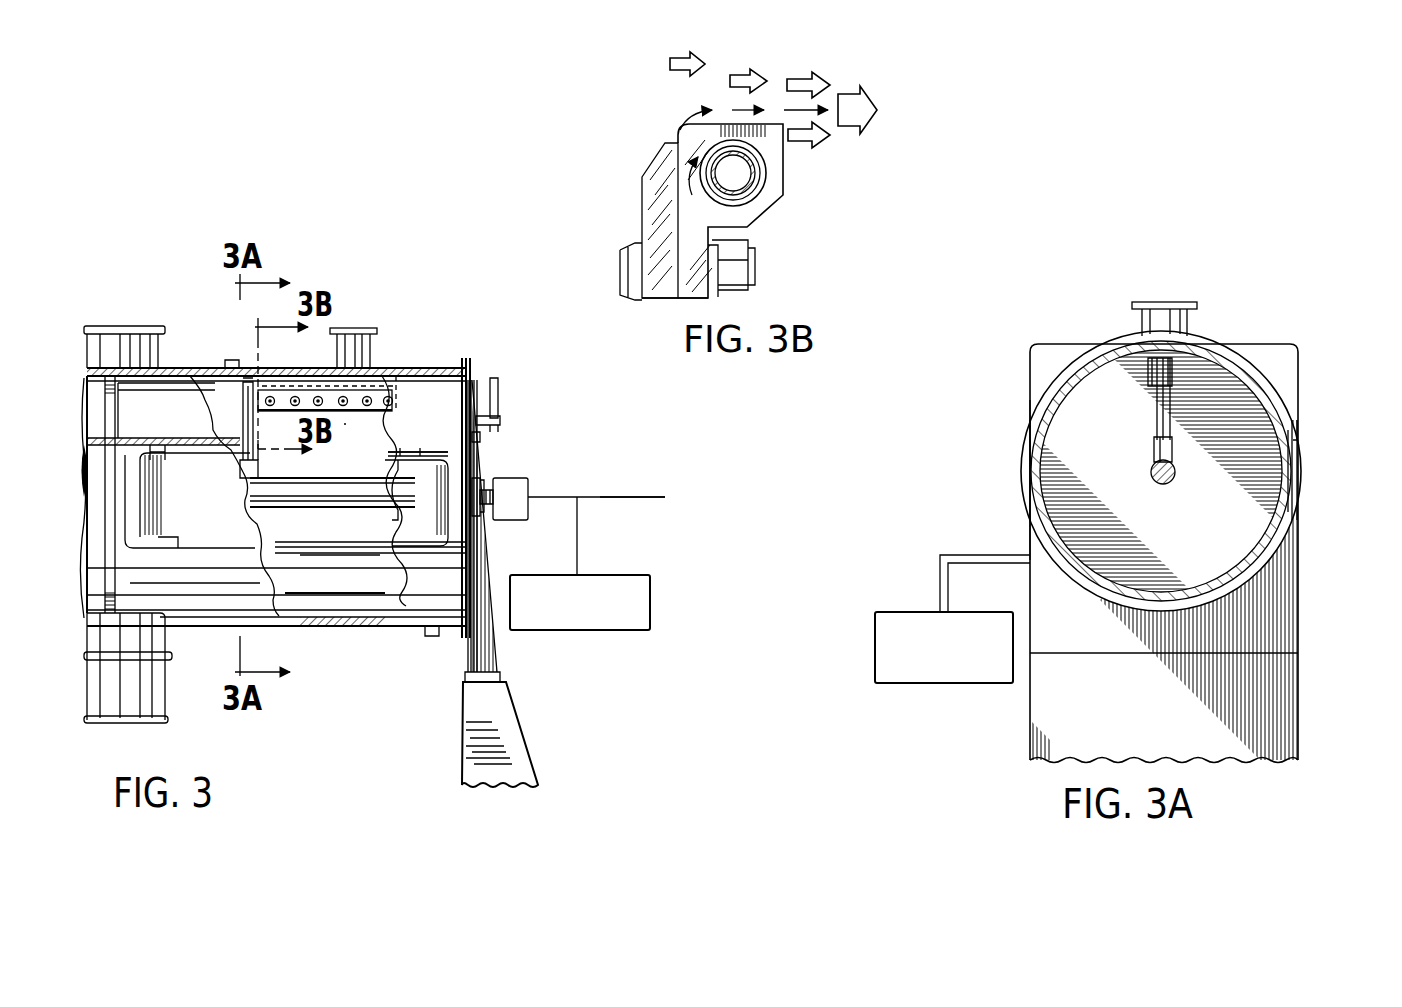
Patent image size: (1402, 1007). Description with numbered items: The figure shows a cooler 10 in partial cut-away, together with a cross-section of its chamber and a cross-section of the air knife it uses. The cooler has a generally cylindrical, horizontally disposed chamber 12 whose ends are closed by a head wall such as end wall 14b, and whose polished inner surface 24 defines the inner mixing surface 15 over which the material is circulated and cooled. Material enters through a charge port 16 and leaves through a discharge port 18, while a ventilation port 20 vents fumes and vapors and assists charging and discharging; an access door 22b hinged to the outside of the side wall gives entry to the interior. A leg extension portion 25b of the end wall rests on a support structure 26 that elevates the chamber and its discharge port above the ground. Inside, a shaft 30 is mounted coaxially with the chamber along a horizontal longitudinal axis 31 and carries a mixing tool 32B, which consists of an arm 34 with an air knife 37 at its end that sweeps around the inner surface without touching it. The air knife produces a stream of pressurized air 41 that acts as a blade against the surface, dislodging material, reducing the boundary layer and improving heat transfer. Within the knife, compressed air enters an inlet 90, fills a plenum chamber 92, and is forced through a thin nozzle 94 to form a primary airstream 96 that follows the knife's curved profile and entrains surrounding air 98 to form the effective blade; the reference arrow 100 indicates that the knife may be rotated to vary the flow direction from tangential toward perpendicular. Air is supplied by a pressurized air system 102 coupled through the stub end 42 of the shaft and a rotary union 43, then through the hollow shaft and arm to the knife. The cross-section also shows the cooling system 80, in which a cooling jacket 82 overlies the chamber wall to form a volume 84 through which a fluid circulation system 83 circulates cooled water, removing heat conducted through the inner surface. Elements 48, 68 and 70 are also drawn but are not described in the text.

In FIG. 3, the cooler 10 is at (216, 220).
In FIG. 3, the chamber 12 is at (426, 362).
In FIG. 3A, the chamber 12 is at (1212, 340).
In FIG. 3, the end wall 14b is at (478, 460).
In FIG. 3, the inner mixing surface 15 is at (360, 575).
In FIG. 3A, the inner mixing surface 15 is at (1192, 588).
In FIG. 3, the charge port 16 is at (130, 328).
In FIG. 3, the discharge port 18 is at (160, 696).
In FIG. 3, the ventilation port 20 is at (352, 328).
In FIG. 3A, the ventilation port 20 is at (1162, 302).
In FIG. 3, the access door 22b is at (162, 470).
In FIG. 3A, the access door 22b is at (1302, 472).
In FIG. 3, the inner surface of the chamber side wall 24 is at (212, 392).
In FIG. 3, the leg extension portion 25b is at (470, 666).
In FIG. 3A, the leg extension portion 25b is at (1082, 630).
In FIG. 3, the support structure 26 is at (475, 754).
In FIG. 3A, the support structure 26 is at (1126, 710).
In FIG. 3A, the shaft 30 is at (1150, 474).
In FIG. 3, the longitudinal axis 31 is at (626, 498).
In FIG. 3, the mixing tool 32B is at (346, 426).
In FIG. 3A, the mixing tool 32B is at (1152, 428).
In FIG. 3, the arm 34 is at (240, 445).
In FIG. 3A, the arm 34 is at (1178, 414).
In FIG. 3, the air knife 37 is at (304, 396).
In FIG. 3B, the air knife 37 is at (767, 44).
In FIG. 3A, the air knife 37 is at (1150, 372).
In FIG. 3B, the stream of pressurized air 41 is at (834, 86).
In FIG. 3, the stub end 42 is at (554, 466).
In FIG. 3, the rotary union 43 is at (527, 516).
In FIG. 3, the fitting 48 is at (478, 512).
In FIG. 3, the coupling 68 is at (484, 484).
In FIG. 3, the bracket 70 is at (418, 429).
In FIG. 3A, the cooling system 80 is at (1018, 418).
In FIG. 3A, the cooling jacket 82 is at (1024, 492).
In FIG. 3A, the fluid circulation system 83 is at (904, 612).
In FIG. 3A, the volume 84 is at (1026, 452).
In FIG. 3B, the inlet 90 is at (738, 176).
In FIG. 3B, the plenum chamber 92 is at (780, 165).
In FIG. 3B, the nozzle 94 is at (672, 140).
In FIG. 3B, the primary airstream 96 is at (730, 112).
In FIG. 3B, the surrounding air 98 is at (678, 60).
In FIG. 3B, the reference arrow 100 is at (742, 218).
In FIG. 3, the pressurized air system 102 is at (634, 576).